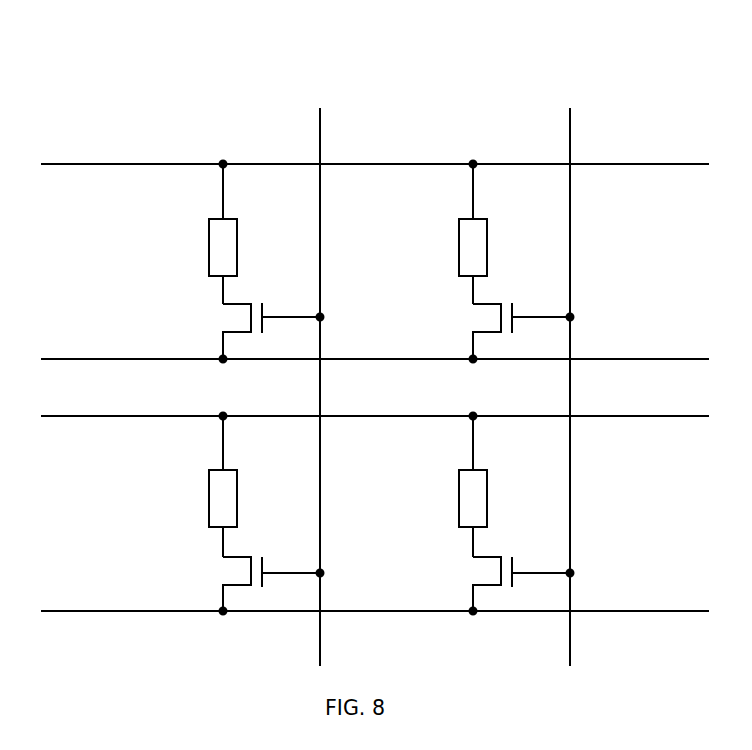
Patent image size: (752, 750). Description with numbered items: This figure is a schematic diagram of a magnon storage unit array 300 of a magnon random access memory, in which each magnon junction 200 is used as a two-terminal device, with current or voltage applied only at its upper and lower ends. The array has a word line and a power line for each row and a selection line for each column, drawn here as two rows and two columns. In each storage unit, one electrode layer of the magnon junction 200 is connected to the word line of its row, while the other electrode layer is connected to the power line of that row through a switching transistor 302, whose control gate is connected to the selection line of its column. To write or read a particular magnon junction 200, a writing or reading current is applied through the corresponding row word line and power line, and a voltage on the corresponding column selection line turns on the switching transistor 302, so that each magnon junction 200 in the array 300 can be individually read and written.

The magnon storage unit array 300 is at (372, 346).
The magnon junction 200 is at (190, 236).
The switching transistor 302 is at (271, 314).